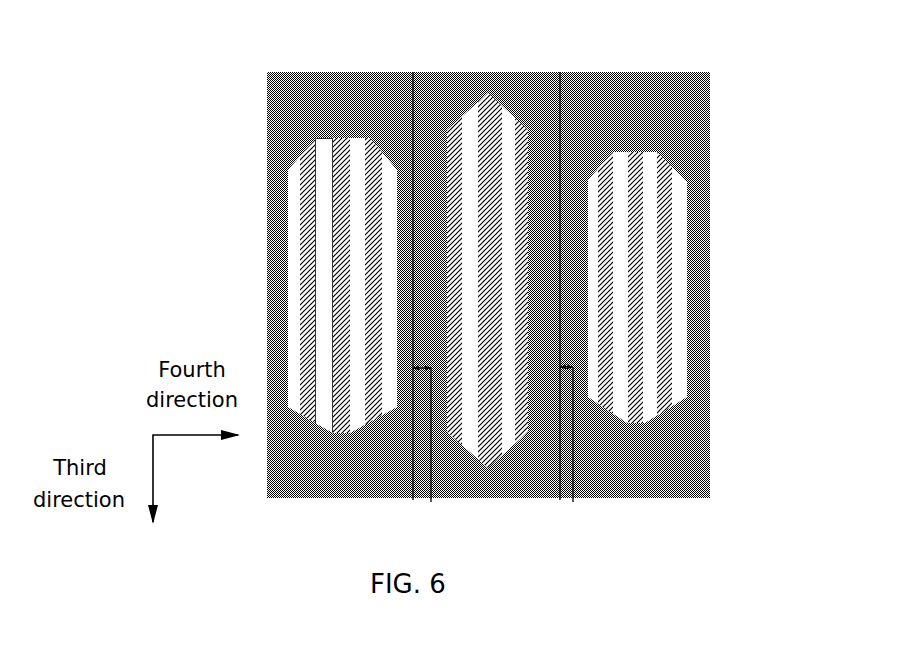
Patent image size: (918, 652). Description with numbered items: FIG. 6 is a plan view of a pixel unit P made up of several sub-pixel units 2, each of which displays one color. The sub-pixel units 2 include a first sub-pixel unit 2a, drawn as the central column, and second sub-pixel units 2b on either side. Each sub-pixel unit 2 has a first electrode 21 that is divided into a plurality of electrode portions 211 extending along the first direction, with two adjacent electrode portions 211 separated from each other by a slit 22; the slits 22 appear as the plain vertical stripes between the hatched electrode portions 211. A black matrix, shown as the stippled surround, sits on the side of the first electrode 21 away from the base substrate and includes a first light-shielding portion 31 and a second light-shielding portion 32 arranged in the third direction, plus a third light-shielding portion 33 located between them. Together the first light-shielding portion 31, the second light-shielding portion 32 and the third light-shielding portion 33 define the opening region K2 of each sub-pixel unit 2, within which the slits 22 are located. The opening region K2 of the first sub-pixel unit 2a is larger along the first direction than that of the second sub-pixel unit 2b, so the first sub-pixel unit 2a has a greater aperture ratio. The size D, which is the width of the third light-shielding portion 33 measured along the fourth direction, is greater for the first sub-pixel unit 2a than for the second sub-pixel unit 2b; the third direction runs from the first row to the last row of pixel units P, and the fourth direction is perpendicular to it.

The pixel unit P is at (259, 33).
The sub-pixel unit 2 is at (460, 253).
The first sub-pixel unit 2a is at (462, 72).
The second sub-pixel unit 2b is at (460, 221).
The first electrode 21 is at (225, 286).
The electrode portion 211 is at (305, 207).
The slit 22 is at (323, 255).
The first light-shielding portion 31 is at (690, 125).
The second light-shielding portion 32 is at (690, 467).
The third light-shielding portion 33 is at (688, 283).
The opening region K2 is at (680, 172).
The size of third light-shielding portion D is at (499, 450).